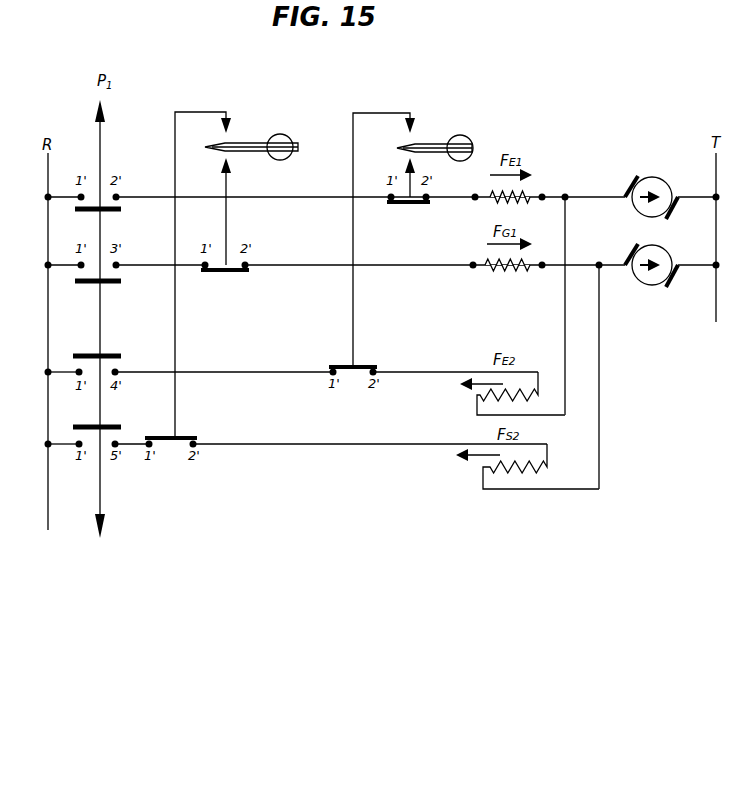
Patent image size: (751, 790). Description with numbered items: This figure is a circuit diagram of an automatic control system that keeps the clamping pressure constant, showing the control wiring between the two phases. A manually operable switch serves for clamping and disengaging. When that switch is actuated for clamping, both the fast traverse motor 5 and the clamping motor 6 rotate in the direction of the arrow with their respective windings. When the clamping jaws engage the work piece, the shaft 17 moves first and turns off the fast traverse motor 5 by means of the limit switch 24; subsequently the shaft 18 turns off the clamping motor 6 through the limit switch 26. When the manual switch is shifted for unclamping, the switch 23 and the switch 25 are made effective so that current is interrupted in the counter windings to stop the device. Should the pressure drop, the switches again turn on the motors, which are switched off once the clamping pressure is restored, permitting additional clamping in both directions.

The fast traverse motor 5 is at (655, 181).
The clamping motor 6 is at (650, 279).
The shaft 17 is at (462, 143).
The shaft 18 is at (281, 142).
The switch 23 is at (415, 127).
The limit switch 24 is at (405, 164).
The switch 25 is at (232, 125).
The limit switch 26 is at (231, 163).